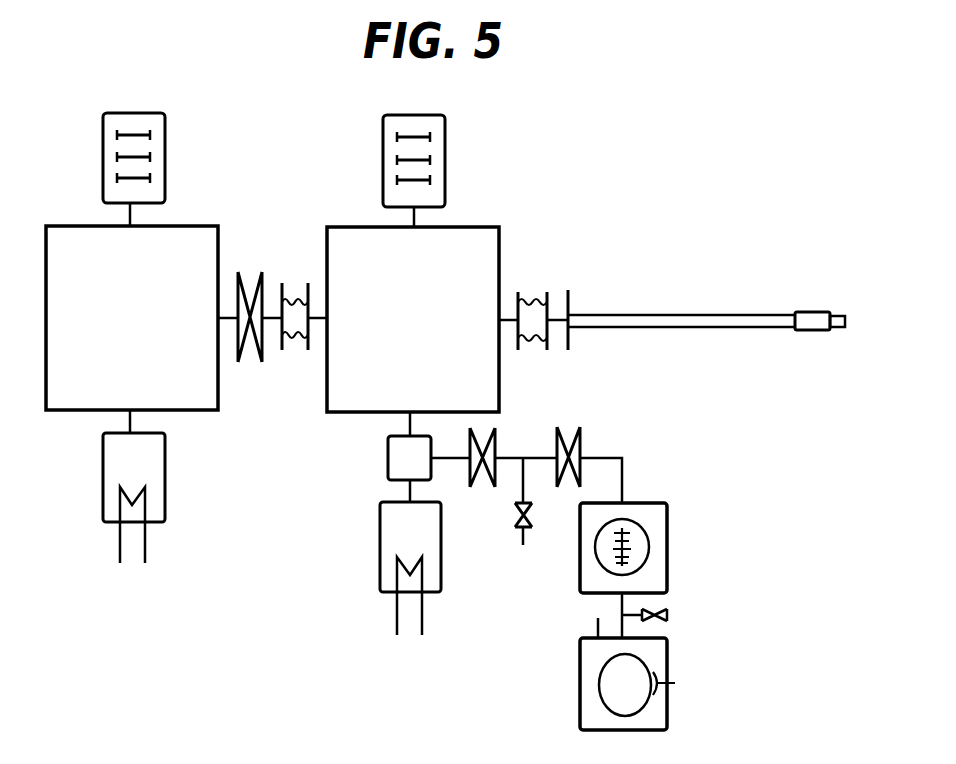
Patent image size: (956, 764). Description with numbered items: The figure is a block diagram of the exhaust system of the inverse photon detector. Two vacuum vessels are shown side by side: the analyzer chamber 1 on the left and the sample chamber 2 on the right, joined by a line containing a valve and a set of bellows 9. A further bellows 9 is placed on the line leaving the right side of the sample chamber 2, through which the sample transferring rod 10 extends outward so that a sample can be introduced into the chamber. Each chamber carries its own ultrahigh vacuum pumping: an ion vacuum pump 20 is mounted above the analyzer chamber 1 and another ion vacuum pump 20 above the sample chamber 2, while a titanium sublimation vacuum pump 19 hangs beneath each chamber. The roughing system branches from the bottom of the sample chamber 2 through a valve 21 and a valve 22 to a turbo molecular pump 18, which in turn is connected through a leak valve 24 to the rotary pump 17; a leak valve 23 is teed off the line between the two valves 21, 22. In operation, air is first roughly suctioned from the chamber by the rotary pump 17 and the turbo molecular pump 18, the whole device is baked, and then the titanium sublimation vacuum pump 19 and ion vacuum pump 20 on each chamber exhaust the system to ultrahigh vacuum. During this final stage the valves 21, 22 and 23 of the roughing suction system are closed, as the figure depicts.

The analyzer chamber 1 is at (188, 226).
The sample chamber 2 is at (476, 227).
The bellows 9 is at (296, 337).
The sample transferring rod 10 is at (634, 316).
The rotary pump (RP) 17 is at (667, 710).
The turbo molecular pump (TMP) 18 is at (667, 530).
The titanium sublimation vacuum pump 19 is at (272, 541).
The ion vacuum pump 20 is at (165, 152).
The valve 21 is at (495, 440).
The valve 22 is at (580, 433).
The leak valve 23 is at (518, 520).
The leak valve 24 is at (667, 615).